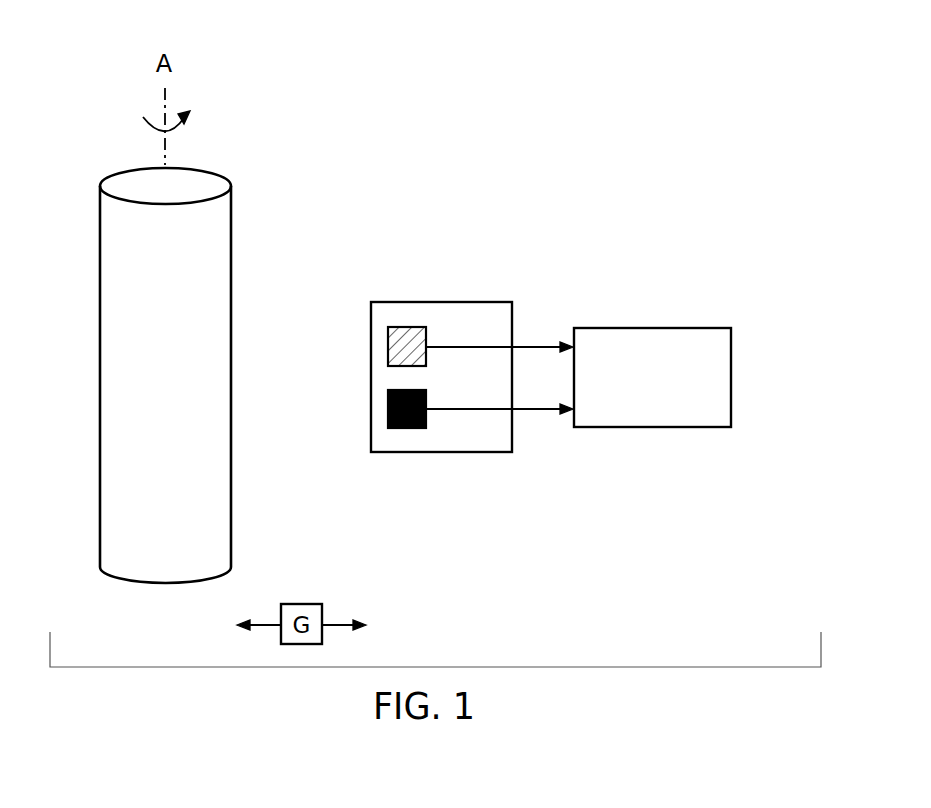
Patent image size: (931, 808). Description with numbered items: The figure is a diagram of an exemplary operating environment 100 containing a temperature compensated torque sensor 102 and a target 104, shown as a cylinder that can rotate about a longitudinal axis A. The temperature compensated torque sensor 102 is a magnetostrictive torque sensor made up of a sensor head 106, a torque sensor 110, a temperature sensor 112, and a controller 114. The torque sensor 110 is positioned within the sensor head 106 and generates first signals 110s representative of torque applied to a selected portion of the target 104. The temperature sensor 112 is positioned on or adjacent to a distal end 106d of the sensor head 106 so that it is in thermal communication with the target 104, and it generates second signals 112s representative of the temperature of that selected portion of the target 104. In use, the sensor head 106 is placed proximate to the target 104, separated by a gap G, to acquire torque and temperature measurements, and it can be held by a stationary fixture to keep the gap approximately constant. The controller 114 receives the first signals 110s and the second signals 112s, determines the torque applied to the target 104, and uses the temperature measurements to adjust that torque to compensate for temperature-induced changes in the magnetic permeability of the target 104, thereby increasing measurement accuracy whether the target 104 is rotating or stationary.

The operating environment 100 is at (563, 77).
The temperature compensated torque sensor 102 is at (548, 240).
The target 104 is at (145, 391).
The sensor head 106 is at (473, 311).
The distal end 106d is at (367, 258).
The torque sensor 110 is at (403, 430).
The first signals 110s is at (545, 414).
The temperature sensor 112 is at (401, 326).
The second signals 112s is at (545, 342).
The controller 114 is at (631, 392).